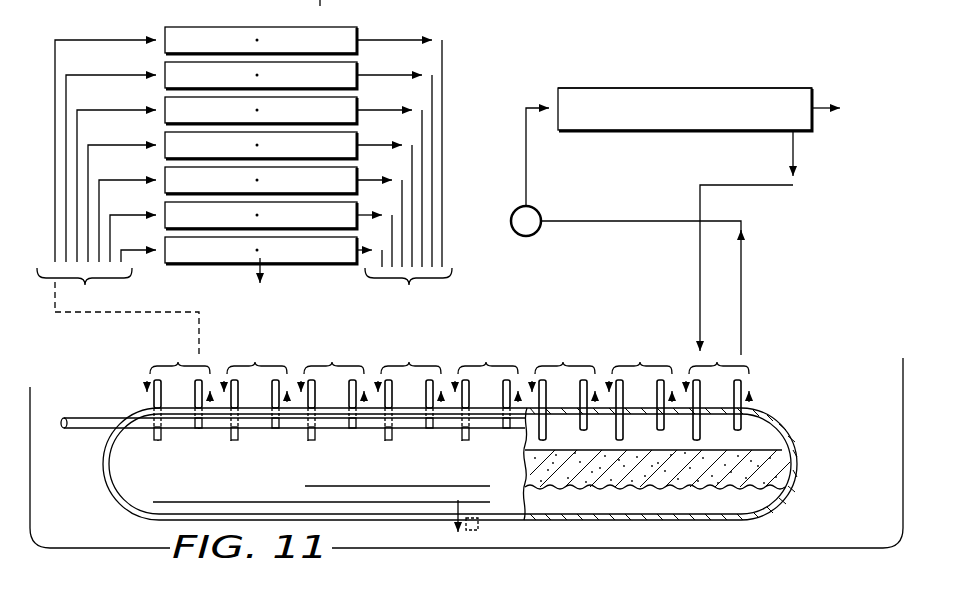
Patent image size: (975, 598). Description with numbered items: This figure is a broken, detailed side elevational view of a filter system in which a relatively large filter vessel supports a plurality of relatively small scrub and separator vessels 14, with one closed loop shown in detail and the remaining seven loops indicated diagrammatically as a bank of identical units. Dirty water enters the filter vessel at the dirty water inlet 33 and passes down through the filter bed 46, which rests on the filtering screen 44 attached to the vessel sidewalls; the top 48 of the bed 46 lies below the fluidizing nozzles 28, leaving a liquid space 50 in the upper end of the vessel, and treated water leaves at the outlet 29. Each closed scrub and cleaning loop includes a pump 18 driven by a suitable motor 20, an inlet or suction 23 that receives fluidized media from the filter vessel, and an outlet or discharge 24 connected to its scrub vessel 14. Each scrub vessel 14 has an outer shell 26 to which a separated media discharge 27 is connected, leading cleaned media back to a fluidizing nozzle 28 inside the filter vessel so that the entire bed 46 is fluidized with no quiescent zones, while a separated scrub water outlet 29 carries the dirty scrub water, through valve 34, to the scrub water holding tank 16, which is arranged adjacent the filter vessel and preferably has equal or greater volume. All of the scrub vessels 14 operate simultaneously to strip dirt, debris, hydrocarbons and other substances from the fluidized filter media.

The scrub vessel 14 is at (758, 78).
The pump outlet 24 is at (55, 62).
The separated media discharge 27 is at (447, 57).
The outer shell 26 is at (606, 88).
The separated scrub water outlet 29 is at (258, 276).
The valve 34 is at (881, 108).
The scrub water holding tank 16 is at (881, 108).
The pump 18 is at (538, 233).
The motor 20 is at (626, 280).
The pump inlet 23 is at (734, 395).
The fluidizing nozzle 28 is at (199, 430).
The dirty water inlet 33 is at (90, 430).
The top of filter bed 48 is at (405, 477).
The filter bed 46 is at (329, 501).
The filtering screen 44 is at (553, 489).
The liquid space 50 is at (790, 432).